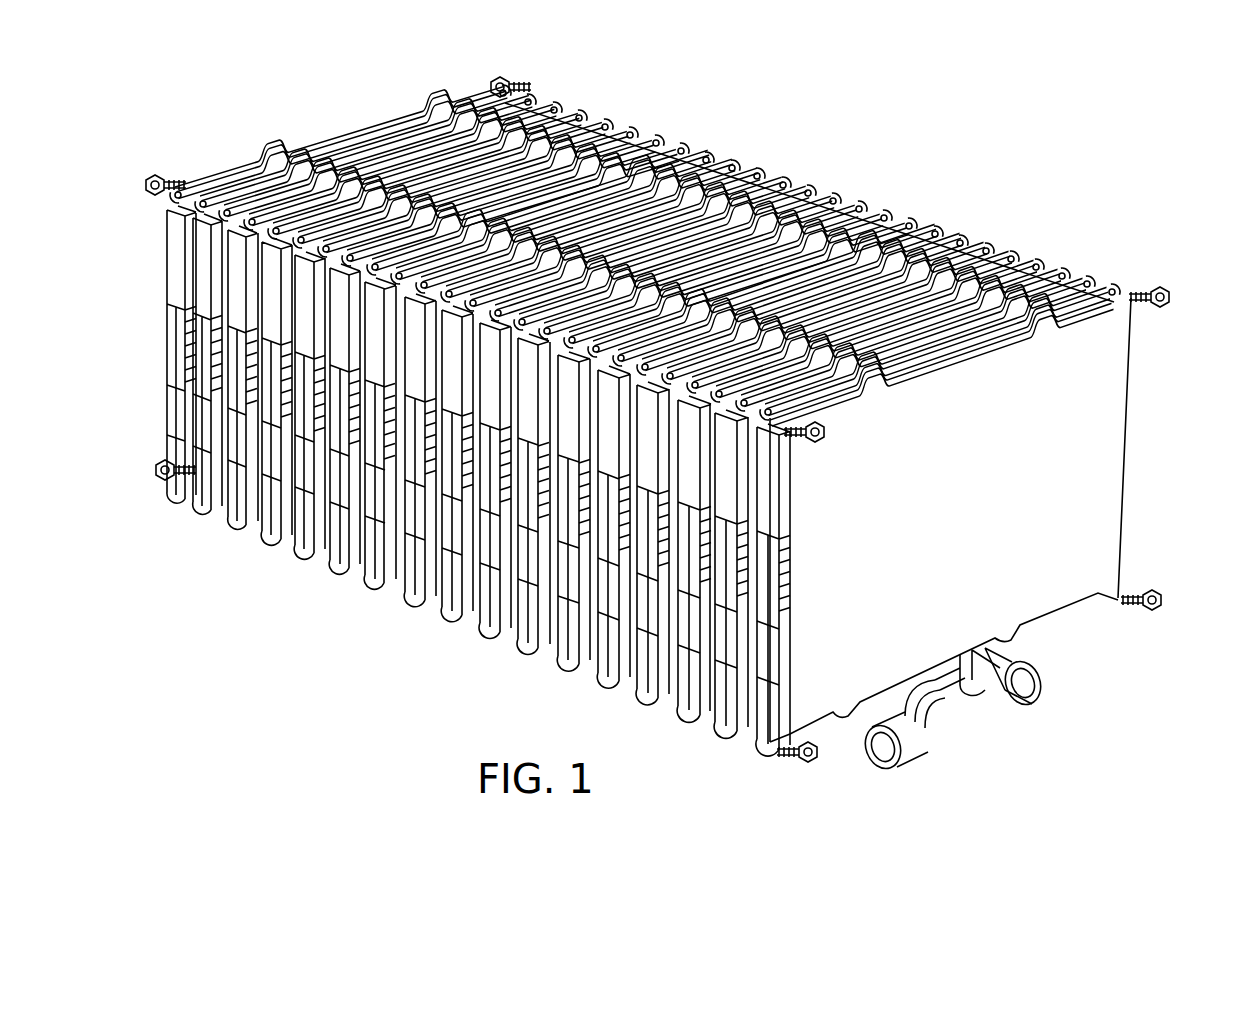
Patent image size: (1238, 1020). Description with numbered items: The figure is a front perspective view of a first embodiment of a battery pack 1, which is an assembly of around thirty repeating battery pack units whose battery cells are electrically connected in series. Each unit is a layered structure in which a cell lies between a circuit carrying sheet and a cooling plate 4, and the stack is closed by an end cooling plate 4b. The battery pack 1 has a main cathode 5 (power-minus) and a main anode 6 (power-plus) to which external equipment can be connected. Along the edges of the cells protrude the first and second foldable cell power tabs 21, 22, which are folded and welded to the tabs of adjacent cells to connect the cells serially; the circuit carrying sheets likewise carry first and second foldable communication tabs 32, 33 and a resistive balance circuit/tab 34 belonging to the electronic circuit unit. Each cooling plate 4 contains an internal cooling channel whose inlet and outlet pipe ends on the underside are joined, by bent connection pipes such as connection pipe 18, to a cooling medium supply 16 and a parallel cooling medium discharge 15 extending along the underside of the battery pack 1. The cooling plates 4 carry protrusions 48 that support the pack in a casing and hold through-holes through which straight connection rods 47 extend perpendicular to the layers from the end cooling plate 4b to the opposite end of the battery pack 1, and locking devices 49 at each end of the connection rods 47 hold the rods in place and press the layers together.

The battery pack 1 is at (1050, 134).
The cooling plate 4 is at (1050, 550).
The end cooling plate 4b is at (415, 135).
The main cathode 5 is at (183, 278).
The main anode 6 is at (745, 665).
The cooling medium discharge 15 is at (883, 750).
The cooling medium supply 16 is at (1030, 680).
The connection pipe 18 is at (960, 700).
The first foldable cell power tab 21 is at (470, 535).
The second foldable cell power tab 22 is at (440, 385).
The first foldable communication tab 32 is at (180, 383).
The second foldable communication tab 33 is at (172, 313).
The resistive balance circuit/tab 34 is at (360, 150).
The connection rod 47 is at (1063, 262).
The protrusion 48 is at (755, 205).
The locking device 49 is at (157, 175).